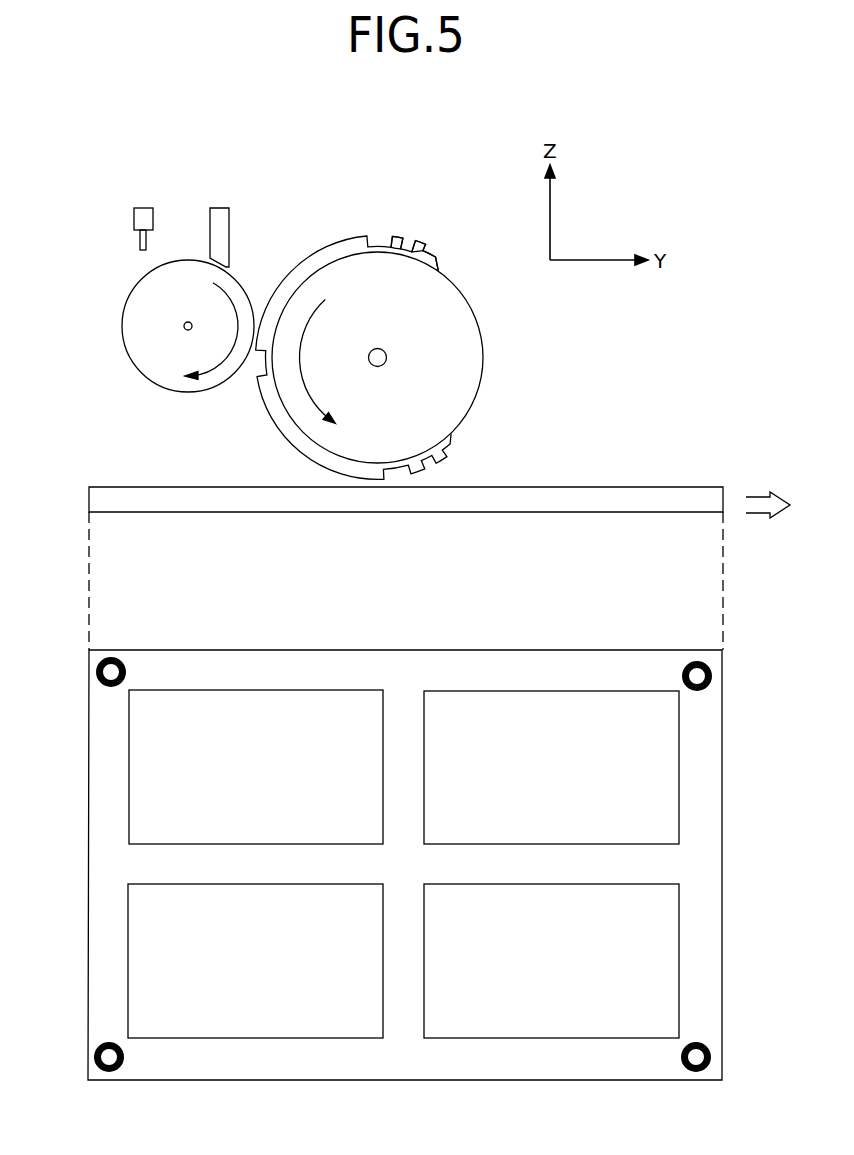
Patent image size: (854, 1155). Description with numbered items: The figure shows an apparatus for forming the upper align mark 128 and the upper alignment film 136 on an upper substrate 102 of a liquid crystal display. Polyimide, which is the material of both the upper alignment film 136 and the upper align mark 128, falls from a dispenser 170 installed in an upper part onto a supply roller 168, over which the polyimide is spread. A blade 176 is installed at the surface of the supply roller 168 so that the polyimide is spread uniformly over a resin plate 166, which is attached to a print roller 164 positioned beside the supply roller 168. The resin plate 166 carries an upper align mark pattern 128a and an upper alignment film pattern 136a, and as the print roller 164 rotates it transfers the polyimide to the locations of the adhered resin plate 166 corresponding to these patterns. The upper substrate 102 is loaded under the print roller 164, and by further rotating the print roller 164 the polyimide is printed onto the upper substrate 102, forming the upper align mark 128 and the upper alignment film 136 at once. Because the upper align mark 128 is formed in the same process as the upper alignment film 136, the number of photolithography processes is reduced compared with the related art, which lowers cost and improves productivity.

The dispenser 170 is at (144, 208).
The blade 176 is at (220, 210).
The supply roller 168 is at (122, 348).
The print roller 164 is at (472, 356).
The upper alignment film pattern 136a is at (327, 250).
The upper align mark pattern 128a is at (418, 244).
The resin plate 166 is at (443, 249).
The upper substrate 102 is at (322, 510).
The upper alignment film 136 is at (196, 705).
The upper align mark 128 is at (96, 672).